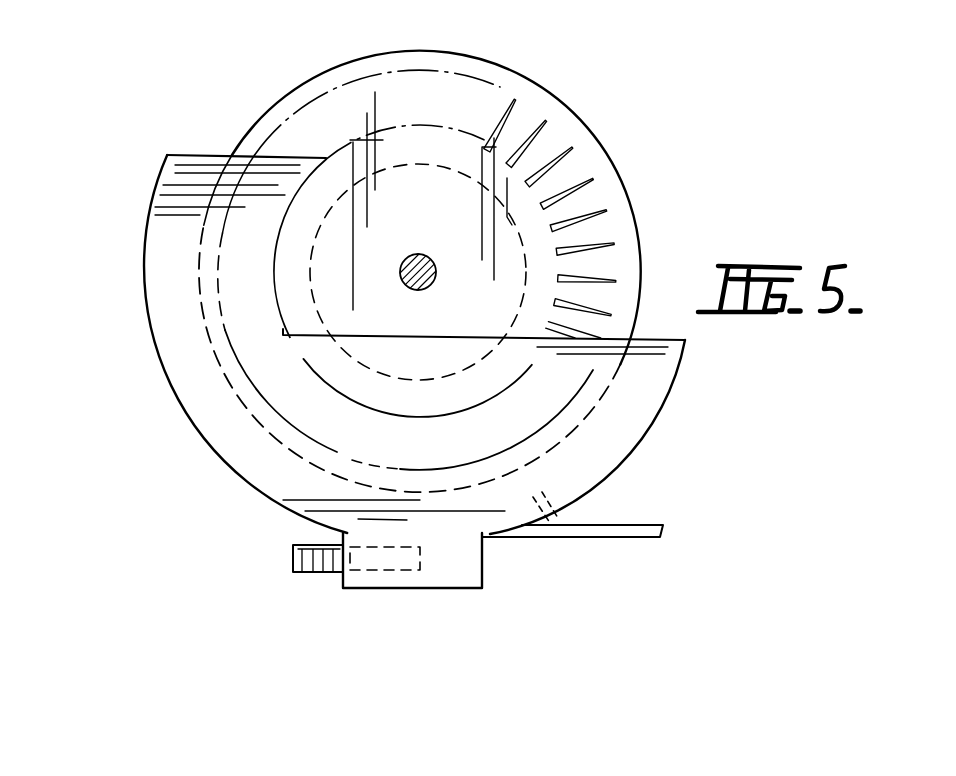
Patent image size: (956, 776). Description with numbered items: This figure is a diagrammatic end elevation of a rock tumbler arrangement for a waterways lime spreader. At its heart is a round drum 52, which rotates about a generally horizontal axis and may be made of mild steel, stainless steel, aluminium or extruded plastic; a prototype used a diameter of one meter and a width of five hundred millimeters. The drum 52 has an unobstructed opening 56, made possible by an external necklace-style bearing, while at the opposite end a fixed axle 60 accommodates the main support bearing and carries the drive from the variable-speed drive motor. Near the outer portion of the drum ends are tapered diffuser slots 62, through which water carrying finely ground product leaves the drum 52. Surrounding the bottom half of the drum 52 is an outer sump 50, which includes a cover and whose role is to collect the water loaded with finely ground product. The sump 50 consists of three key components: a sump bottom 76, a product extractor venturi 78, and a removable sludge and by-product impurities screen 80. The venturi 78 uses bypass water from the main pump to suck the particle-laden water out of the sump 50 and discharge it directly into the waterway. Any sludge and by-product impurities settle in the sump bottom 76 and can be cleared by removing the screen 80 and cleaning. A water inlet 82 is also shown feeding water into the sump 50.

The outer sump 50 is at (163, 377).
The round drum 52 is at (548, 88).
The unobstructed opening 56 is at (447, 172).
The fixed axle 60 is at (427, 281).
The tapered diffuser slots 62 is at (605, 238).
The sump bottom 76 is at (483, 566).
The product extractor venturi 78 is at (615, 538).
The sludge and by-product impurities screen 80 is at (292, 557).
The water inlet 82 is at (560, 510).